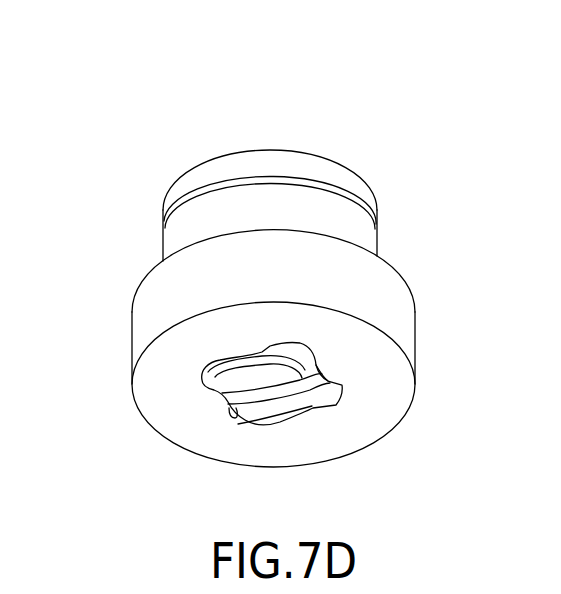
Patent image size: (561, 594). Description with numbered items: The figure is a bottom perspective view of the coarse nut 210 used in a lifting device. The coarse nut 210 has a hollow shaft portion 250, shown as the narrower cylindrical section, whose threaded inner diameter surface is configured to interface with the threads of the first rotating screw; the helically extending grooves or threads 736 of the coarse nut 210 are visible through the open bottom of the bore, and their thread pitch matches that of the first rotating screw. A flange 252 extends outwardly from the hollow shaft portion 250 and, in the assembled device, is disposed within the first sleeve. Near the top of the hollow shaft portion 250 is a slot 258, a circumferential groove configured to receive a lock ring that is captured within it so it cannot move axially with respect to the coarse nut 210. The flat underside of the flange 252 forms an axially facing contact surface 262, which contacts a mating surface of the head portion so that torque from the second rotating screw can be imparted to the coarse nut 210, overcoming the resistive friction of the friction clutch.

The coarse nut 210 is at (371, 110).
The hollow shaft portion 250 is at (363, 233).
The flange 252 is at (382, 320).
The slot 258 is at (168, 222).
The axially facing contact surface 262 is at (160, 407).
The threads 736 is at (235, 412).